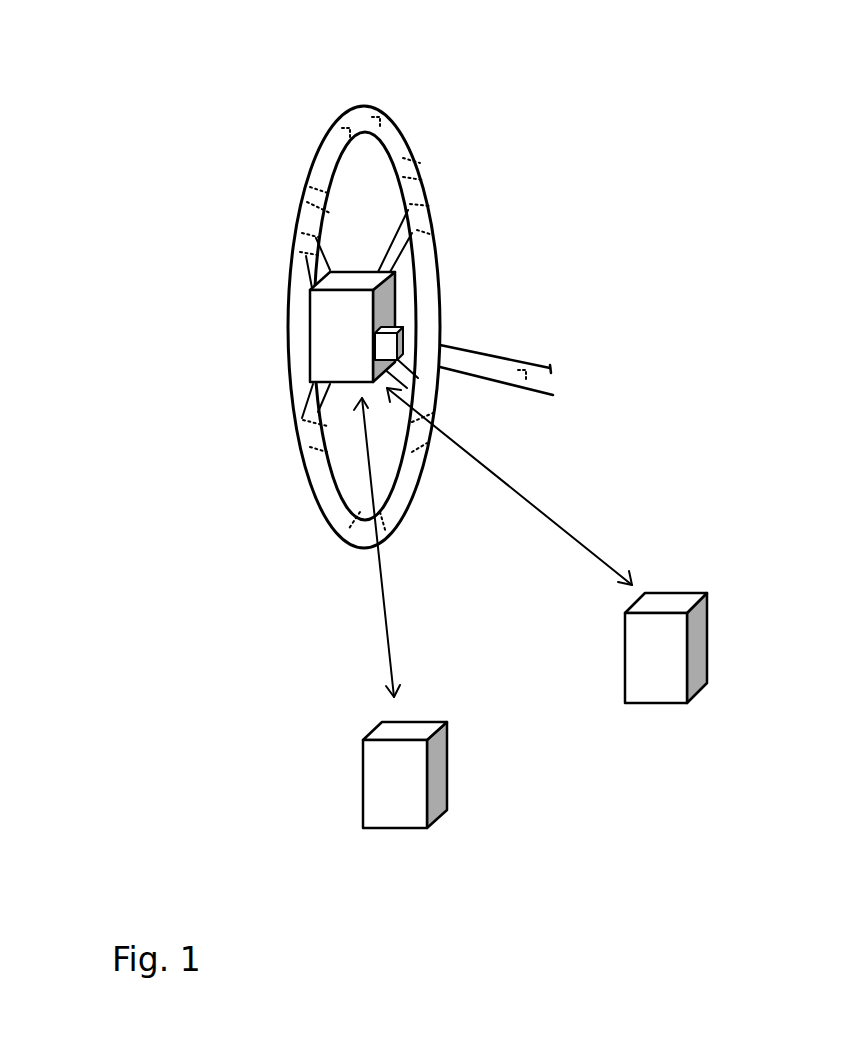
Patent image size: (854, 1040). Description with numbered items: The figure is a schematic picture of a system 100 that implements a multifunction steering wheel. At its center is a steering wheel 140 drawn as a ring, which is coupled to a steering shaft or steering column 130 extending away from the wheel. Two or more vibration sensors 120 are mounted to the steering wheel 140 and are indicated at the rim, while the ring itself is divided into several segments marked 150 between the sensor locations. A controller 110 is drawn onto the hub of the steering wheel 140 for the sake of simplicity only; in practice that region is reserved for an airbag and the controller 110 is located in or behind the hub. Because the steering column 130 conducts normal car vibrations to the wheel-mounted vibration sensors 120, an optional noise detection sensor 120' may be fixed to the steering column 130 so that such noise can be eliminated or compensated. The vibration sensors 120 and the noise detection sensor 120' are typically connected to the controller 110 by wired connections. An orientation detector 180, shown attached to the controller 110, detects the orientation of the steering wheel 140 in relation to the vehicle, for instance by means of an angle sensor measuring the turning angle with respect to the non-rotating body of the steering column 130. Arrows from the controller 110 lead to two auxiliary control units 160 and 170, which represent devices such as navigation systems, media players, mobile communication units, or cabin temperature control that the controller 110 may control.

The system 100 is at (135, 79).
The controller 110 is at (310, 345).
The vibration sensors 120 is at (424, 90).
The noise detection sensor 120' is at (595, 335).
The steering column 130 is at (551, 395).
The steering wheel 140 is at (428, 272).
The ring segment 150 is at (423, 170).
The auxiliary control unit 160 is at (373, 790).
The auxiliary control unit 170 is at (636, 664).
The orientation detector 180 is at (403, 335).